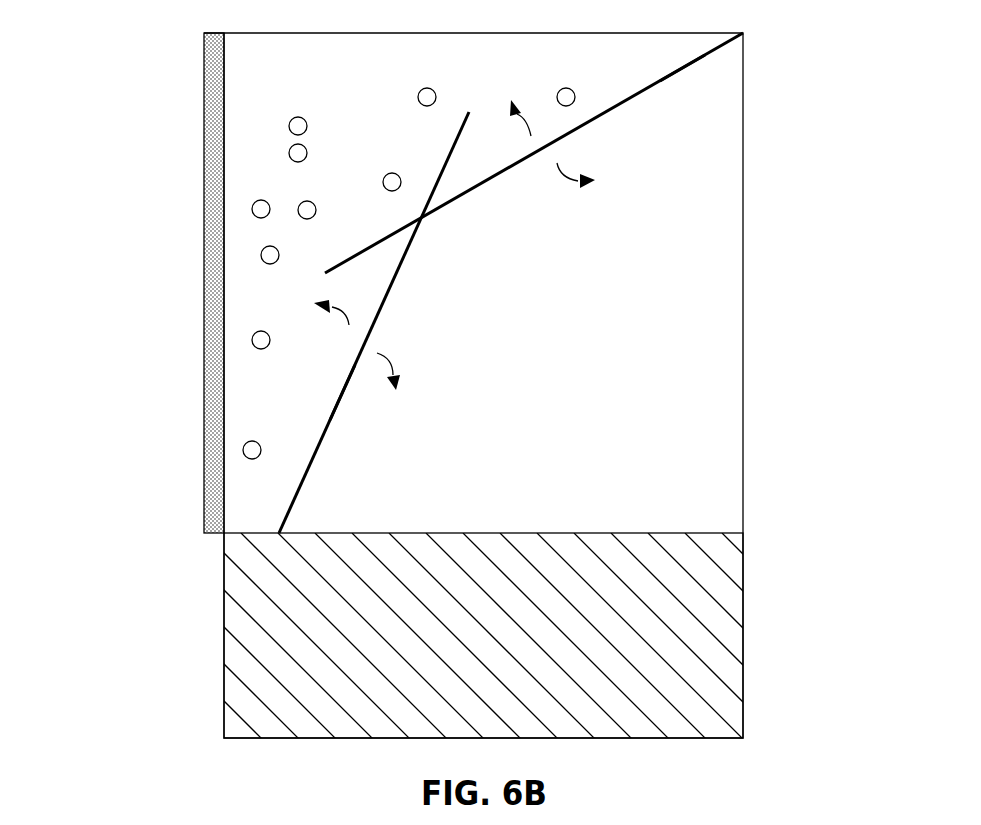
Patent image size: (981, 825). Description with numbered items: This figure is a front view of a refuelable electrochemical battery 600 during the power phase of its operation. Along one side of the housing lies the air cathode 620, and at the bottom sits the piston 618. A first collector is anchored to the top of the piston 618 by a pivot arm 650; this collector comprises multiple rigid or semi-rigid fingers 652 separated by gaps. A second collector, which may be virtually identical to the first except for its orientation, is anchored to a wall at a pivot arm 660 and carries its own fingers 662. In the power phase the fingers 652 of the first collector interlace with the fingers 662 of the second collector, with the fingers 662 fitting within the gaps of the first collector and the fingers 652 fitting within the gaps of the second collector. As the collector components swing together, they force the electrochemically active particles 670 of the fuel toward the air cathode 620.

The battery 600 is at (816, 698).
The piston 618 is at (238, 618).
The air cathode 620 is at (150, 283).
The pivot arm 650 is at (279, 533).
The fingers 652 is at (342, 388).
The pivot arm 660 is at (743, 33).
The fingers 662 is at (681, 70).
The particles 670 is at (289, 126).